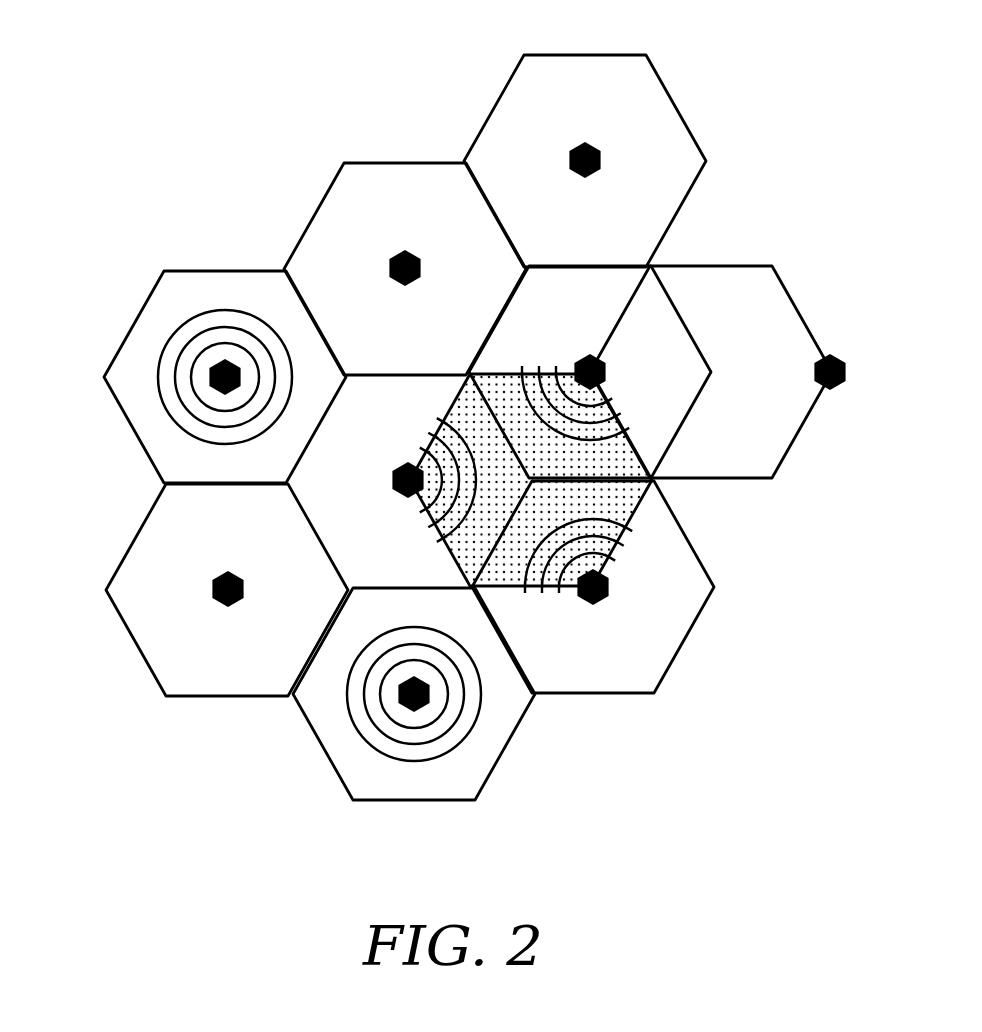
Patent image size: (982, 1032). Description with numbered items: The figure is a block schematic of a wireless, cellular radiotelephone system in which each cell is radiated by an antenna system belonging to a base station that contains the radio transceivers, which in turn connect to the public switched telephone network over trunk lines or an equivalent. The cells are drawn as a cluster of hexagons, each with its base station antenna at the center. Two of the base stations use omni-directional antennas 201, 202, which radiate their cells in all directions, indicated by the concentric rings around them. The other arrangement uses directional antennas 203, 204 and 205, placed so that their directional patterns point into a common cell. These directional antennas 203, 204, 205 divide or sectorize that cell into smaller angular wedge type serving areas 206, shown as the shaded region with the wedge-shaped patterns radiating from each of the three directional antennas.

The omni-directional antenna 201 is at (212, 368).
The omni-directional antenna 202 is at (398, 700).
The directional antenna 203 is at (392, 483).
The directional antenna 204 is at (608, 373).
The directional antenna 205 is at (611, 588).
The angular wedge type serving areas 206 is at (569, 457).